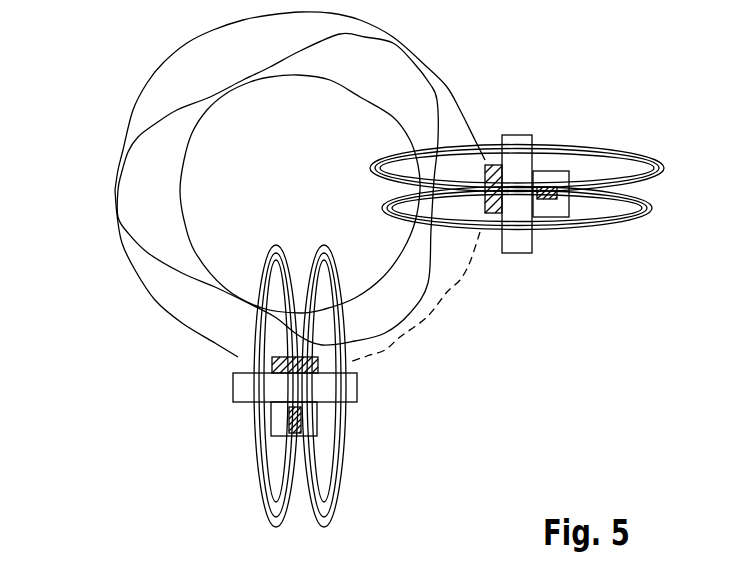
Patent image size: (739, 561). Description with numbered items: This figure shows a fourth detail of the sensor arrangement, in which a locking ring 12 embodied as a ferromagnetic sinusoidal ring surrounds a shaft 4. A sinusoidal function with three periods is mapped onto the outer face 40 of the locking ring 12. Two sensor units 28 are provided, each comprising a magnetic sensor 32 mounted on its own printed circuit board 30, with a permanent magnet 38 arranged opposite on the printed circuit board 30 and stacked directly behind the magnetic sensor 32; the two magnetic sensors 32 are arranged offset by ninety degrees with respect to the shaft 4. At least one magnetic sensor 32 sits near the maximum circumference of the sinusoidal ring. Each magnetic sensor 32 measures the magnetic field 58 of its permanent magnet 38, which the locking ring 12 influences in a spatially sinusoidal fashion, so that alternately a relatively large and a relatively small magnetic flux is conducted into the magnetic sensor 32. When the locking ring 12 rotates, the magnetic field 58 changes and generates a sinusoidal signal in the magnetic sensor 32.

The shaft 4 is at (300, 76).
The locking ring 12 is at (150, 150).
The sensor unit 28 is at (404, 287).
The printed circuit board 30 is at (515, 254).
The magnetic sensor 32 is at (486, 164).
The permanent magnet 38 is at (555, 207).
The outer face 40 is at (430, 93).
The magnetic field 58 is at (595, 122).